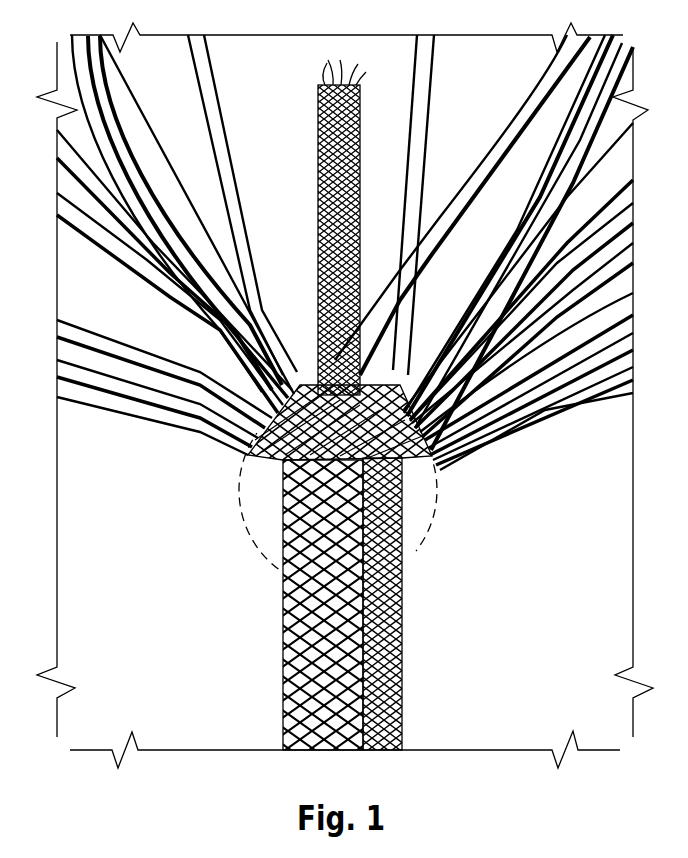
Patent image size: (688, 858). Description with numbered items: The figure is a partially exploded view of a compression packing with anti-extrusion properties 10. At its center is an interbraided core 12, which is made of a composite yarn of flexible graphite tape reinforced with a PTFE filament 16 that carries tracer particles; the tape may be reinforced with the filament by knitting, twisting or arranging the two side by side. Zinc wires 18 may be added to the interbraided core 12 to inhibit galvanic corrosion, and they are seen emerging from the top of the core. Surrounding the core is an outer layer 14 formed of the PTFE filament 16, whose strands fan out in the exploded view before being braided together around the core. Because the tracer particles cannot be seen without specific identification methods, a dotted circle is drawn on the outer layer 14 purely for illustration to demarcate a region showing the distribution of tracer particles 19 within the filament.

The compression packing with anti-extrusion properties 10 is at (246, 550).
The interbraided core 12 is at (317, 152).
The outer layer 14 is at (404, 618).
The PTFE filament 16 is at (547, 407).
The zinc wires 18 is at (318, 84).
The distribution of tracer particles 19 is at (404, 468).